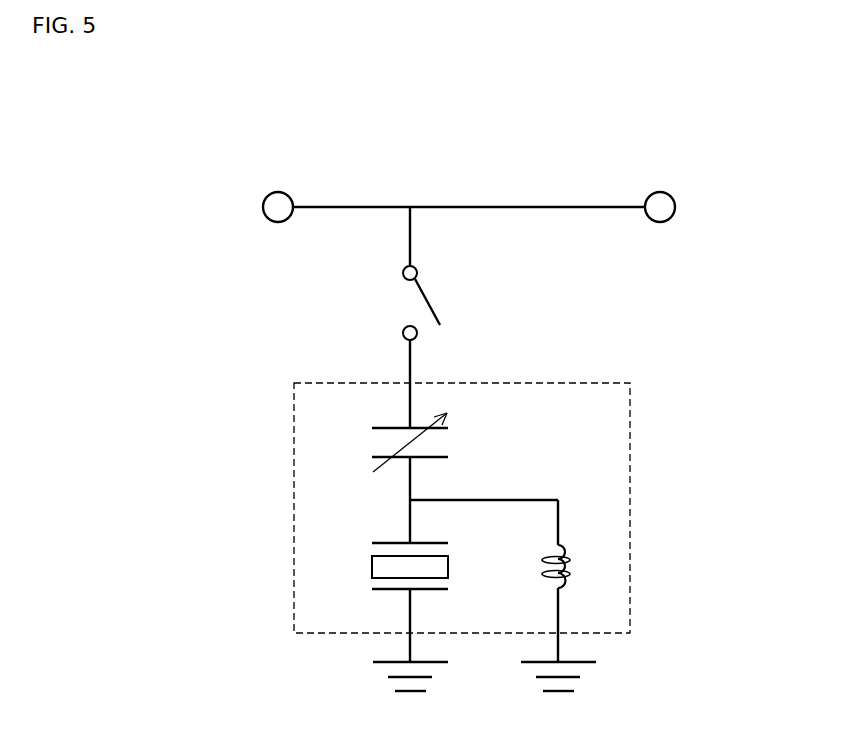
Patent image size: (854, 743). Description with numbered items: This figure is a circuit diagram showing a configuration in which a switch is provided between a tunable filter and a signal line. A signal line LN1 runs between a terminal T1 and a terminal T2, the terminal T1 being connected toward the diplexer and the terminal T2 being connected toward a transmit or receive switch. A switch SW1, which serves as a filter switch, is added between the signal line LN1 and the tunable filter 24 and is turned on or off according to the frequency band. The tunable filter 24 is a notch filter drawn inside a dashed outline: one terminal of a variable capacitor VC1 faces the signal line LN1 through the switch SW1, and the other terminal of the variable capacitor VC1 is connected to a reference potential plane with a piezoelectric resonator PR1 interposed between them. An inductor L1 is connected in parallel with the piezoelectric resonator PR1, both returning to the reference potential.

The terminal T1 is at (272, 192).
The terminal T2 is at (664, 192).
The signal line LN1 is at (553, 206).
The switch SW1 is at (430, 300).
The tunable filter 24 is at (632, 462).
The variable capacitor VC1 is at (386, 442).
The piezoelectric resonator PR1 is at (386, 566).
The inductor L1 is at (574, 566).